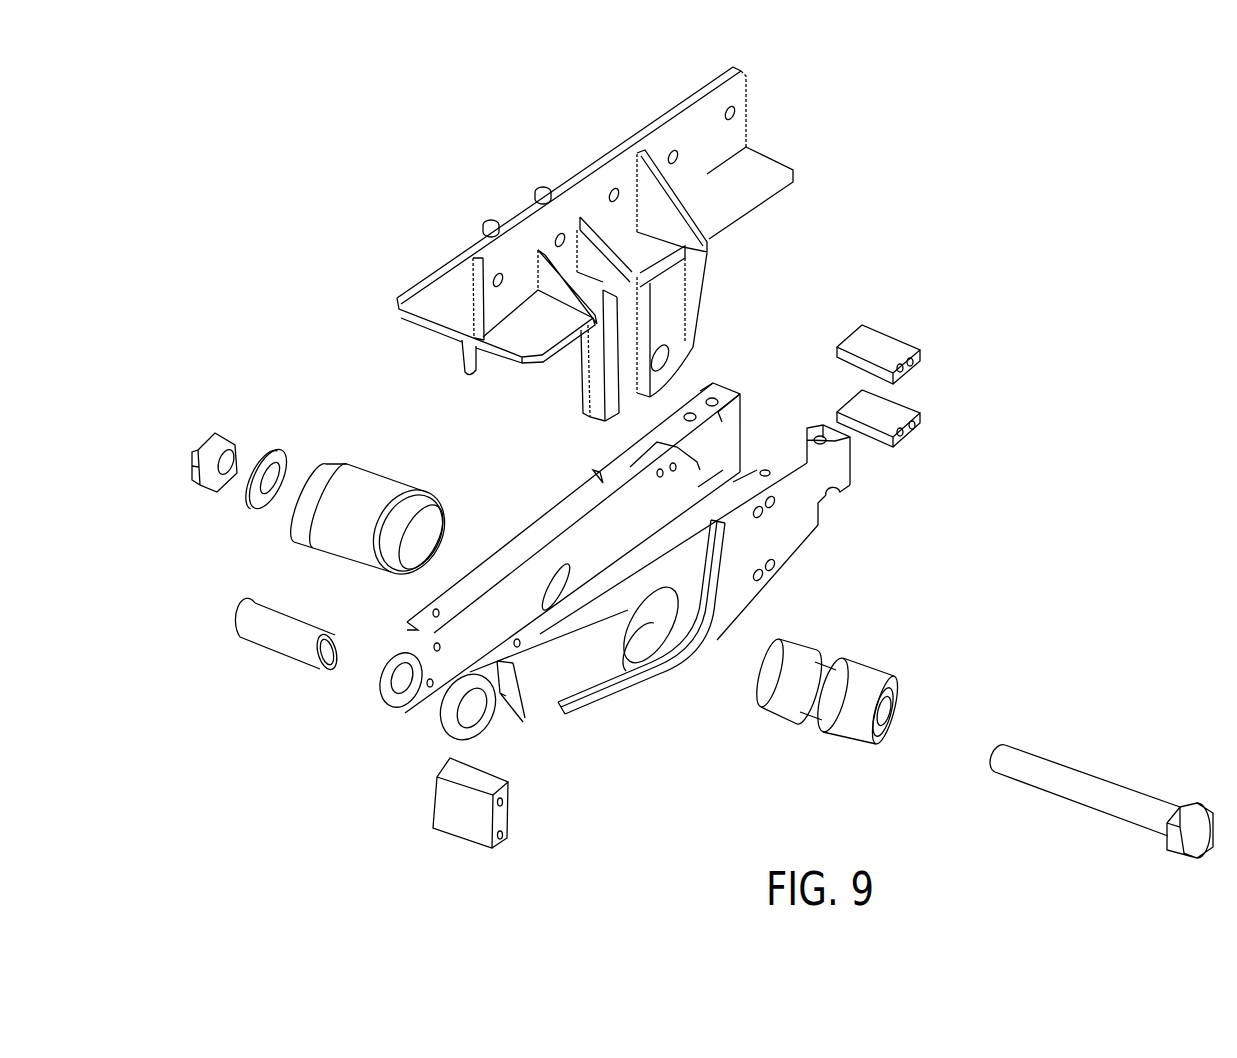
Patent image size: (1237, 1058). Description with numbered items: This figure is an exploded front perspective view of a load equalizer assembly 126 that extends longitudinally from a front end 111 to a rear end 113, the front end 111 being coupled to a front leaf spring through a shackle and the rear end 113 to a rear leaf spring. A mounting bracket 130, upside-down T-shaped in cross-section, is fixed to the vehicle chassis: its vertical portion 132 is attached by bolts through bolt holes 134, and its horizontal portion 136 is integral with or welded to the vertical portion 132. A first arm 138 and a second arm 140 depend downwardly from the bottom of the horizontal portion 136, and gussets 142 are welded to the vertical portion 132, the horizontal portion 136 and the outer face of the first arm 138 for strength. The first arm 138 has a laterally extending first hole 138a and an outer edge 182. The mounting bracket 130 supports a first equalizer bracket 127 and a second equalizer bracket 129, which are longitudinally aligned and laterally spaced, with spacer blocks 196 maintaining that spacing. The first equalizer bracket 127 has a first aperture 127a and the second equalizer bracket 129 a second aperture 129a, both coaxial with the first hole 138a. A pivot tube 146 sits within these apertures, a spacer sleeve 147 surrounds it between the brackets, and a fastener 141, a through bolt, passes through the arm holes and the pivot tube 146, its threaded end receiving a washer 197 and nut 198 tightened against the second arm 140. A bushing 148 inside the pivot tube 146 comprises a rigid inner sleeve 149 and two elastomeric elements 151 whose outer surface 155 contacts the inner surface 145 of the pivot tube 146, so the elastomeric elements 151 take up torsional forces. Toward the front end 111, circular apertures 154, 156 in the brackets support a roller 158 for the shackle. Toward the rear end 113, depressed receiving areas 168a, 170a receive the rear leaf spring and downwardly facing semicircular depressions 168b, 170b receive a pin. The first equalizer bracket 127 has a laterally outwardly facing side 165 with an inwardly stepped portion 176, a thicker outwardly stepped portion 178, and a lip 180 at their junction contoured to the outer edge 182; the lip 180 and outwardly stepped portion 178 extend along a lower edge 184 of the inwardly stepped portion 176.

The load equalizer assembly 126 is at (1062, 222).
The mounting bracket 130 is at (683, 97).
The vertical portion 132 is at (730, 138).
The bolt holes 134 is at (557, 237).
The horizontal portion 136 is at (768, 170).
The gussets 142 is at (692, 217).
The first arm 138 is at (667, 287).
The first hole 138a is at (667, 357).
The second arm 140 is at (482, 367).
The outer edge 182 is at (583, 380).
The rear end 113 is at (812, 332).
The spacer blocks 196 is at (885, 343).
The front end 111 is at (402, 750).
The second equalizer bracket 129 is at (745, 385).
The depressed receiving area 170a is at (727, 407).
The downwardly facing semicircular depression 170b is at (720, 450).
The second aperture 129a is at (590, 572).
The circular aperture 156 is at (402, 697).
The inwardly stepped portion 176 is at (548, 687).
The circular aperture 154 is at (477, 715).
The laterally outwardly facing side 165 is at (678, 588).
The first aperture 127a is at (612, 670).
The lower edge 184 is at (568, 690).
The lip 180 is at (703, 592).
The first equalizer bracket 127 is at (870, 477).
The depressed receiving area 168a is at (805, 430).
The downwardly facing semicircular depression 168b is at (827, 492).
The outwardly stepped portion 178 is at (770, 540).
The spacer sleeve 147 is at (362, 497).
The inner surface 145 is at (415, 528).
The pivot tube 146 is at (323, 475).
The nut 198 is at (200, 460).
The washer 197 is at (260, 507).
The roller 158 is at (273, 633).
The bushing 148 is at (802, 743).
The outer surface 155 is at (777, 678).
The elastomeric elements 151 is at (775, 705).
The inner sleeve 149 is at (820, 680).
The fastener 141 is at (1090, 793).